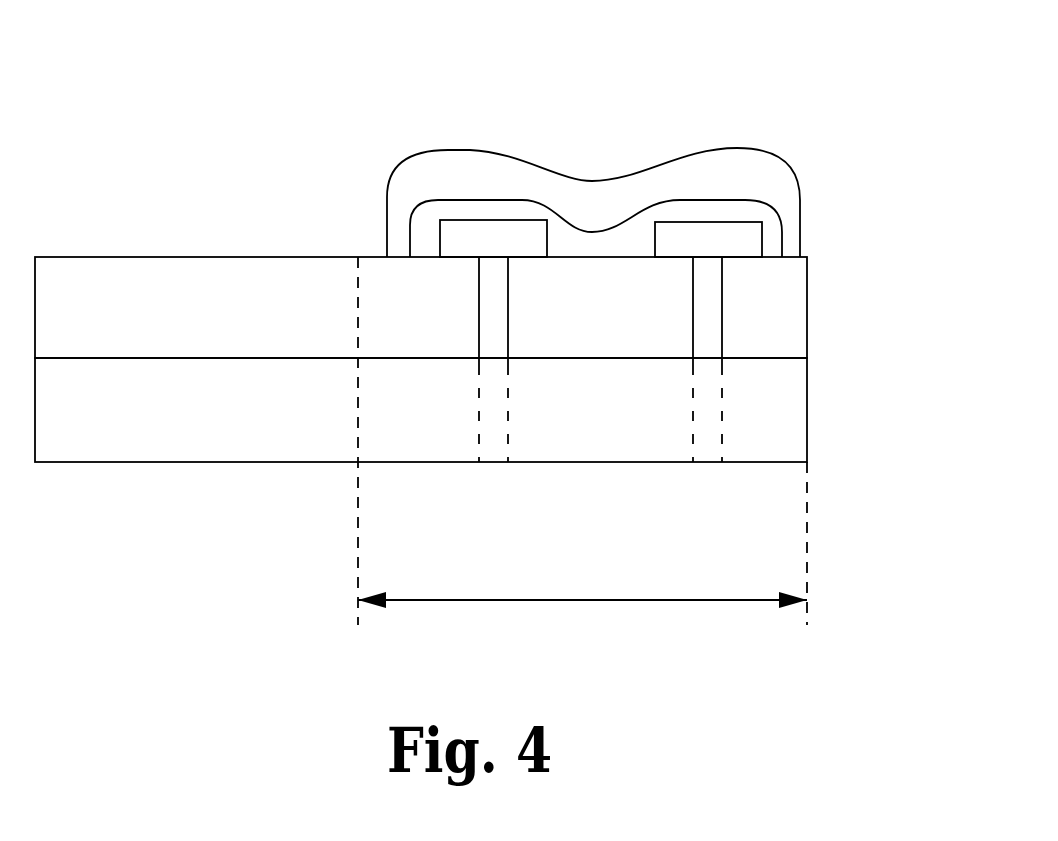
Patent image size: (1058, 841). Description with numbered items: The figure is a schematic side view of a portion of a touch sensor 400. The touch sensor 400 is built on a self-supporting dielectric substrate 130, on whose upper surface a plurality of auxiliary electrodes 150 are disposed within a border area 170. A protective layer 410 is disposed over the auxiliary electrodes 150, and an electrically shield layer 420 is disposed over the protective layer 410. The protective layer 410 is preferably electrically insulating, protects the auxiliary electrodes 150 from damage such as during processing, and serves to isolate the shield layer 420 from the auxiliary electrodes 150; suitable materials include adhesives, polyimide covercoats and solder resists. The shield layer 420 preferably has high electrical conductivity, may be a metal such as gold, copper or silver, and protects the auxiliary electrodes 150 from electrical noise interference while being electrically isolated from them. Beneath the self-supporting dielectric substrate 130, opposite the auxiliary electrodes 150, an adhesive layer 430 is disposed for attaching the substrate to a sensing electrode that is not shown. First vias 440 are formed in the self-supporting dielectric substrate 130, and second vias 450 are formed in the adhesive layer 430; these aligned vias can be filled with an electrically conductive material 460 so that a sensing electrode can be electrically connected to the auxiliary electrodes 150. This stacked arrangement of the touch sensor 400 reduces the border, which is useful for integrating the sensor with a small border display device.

The touch sensor 400 is at (133, 141).
The self-supporting dielectric substrate 130 is at (788, 322).
The adhesive layer 430 is at (788, 420).
The auxiliary electrodes 150 is at (473, 237).
The protective layer 410 is at (770, 217).
The shield layer 420 is at (767, 175).
The first vias 440 is at (479, 315).
The second vias 450 is at (478, 422).
The electrically conductive material 460 is at (708, 443).
The border area 170 is at (562, 600).